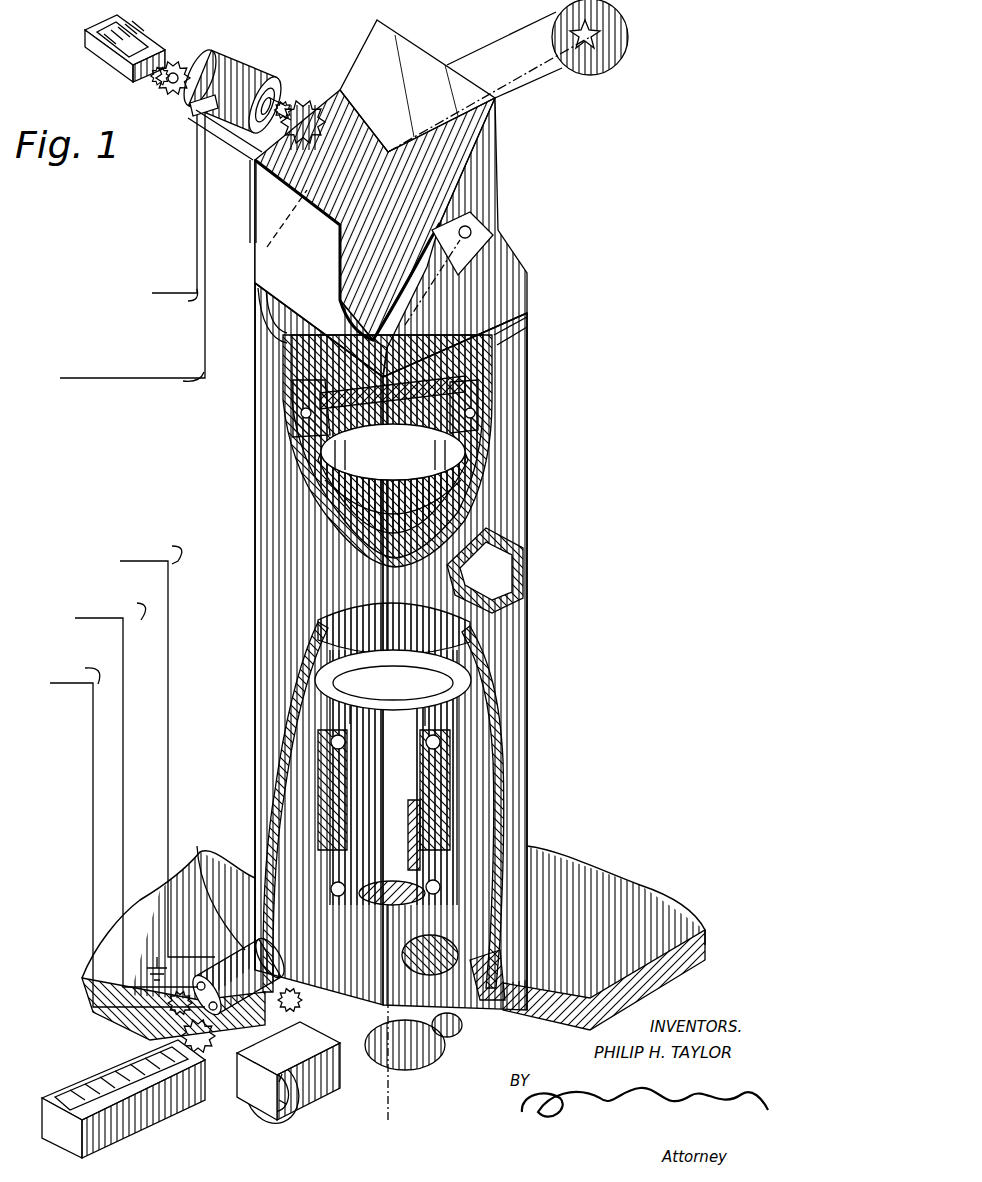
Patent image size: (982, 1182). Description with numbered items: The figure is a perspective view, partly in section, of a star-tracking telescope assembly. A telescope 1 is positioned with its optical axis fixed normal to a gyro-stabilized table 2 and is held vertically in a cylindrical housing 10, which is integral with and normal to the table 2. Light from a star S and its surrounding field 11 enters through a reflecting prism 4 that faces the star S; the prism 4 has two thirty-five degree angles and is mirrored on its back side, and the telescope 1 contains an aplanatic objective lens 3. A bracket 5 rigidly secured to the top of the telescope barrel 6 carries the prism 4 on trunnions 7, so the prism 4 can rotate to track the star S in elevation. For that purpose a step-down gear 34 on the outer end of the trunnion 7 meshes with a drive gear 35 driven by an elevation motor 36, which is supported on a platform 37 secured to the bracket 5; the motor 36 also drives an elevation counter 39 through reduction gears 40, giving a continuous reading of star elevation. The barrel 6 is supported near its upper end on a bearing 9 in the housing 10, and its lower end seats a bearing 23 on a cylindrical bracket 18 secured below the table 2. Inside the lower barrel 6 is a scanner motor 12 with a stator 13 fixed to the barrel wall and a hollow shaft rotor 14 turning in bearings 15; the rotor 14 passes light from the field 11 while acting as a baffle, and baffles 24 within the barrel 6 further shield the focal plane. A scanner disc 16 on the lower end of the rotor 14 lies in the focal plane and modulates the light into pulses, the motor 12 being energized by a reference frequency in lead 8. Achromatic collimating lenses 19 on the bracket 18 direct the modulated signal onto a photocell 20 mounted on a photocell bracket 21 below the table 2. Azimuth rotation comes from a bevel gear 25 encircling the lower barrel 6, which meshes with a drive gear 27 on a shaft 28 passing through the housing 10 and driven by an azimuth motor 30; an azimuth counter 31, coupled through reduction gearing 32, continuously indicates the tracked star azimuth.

The telescope 1 is at (530, 343).
The gyro-stabilized table 2 is at (668, 948).
The aplanatic objective lens 3 is at (322, 456).
The reflecting prism 4 is at (483, 160).
The bracket 5 is at (497, 272).
The telescope barrel 6 is at (488, 462).
The trunnions 7 is at (472, 231).
The reference frequency lead 8 is at (197, 250).
The bearing 9 is at (490, 390).
The cylindrical housing 10 is at (283, 392).
The field 11 is at (612, 73).
The scanner motor 12 is at (322, 702).
The stator 13 is at (450, 792).
The hollow shaft rotor 14 is at (440, 832).
The bearings 15 is at (442, 742).
The scanner disc 16 is at (403, 880).
The cylindrical bracket 18 is at (460, 1002).
The achromatic collimating lenses 19 is at (452, 1040).
The photocell 20 is at (420, 1065).
The photocell bracket 21 is at (327, 1103).
The bearing 23 is at (498, 1000).
The baffles 24 is at (394, 539).
The bevel gear 25 is at (260, 1066).
The drive gear 27 is at (280, 1006).
The shaft 28 is at (215, 886).
The azimuth motor 30 is at (233, 985).
The azimuth counter 31 is at (105, 1134).
The reduction gearing 32 is at (180, 1040).
The step-down gear 34 is at (303, 108).
The drive gear 35 is at (280, 106).
The elevation motor 36 is at (238, 75).
The platform 37 is at (248, 150).
The elevation counter 39 is at (100, 45).
The reduction gears 40 is at (178, 28).
The star S is at (628, 23).